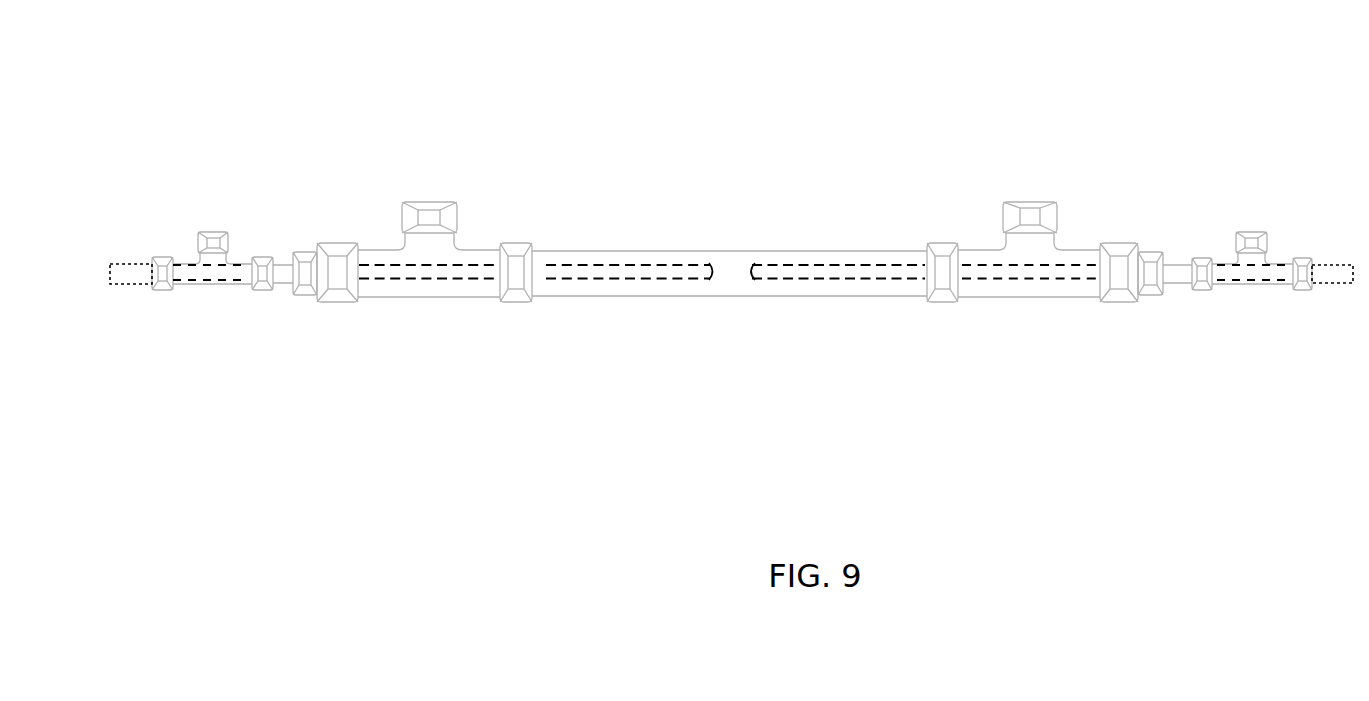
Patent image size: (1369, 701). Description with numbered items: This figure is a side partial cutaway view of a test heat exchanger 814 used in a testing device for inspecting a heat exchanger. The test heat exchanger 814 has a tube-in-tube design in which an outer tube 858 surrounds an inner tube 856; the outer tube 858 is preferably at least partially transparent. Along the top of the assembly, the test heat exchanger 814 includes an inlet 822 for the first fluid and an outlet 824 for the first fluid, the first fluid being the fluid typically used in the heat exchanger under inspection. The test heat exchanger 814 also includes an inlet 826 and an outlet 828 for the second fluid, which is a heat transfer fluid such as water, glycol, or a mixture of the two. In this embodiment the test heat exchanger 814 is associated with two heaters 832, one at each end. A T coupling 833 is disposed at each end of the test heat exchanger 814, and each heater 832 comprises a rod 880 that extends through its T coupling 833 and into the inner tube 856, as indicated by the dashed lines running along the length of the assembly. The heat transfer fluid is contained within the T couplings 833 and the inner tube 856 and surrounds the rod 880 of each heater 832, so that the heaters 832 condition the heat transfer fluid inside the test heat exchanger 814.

The test heat exchanger 814 is at (750, 180).
The inlet for the first fluid 822 is at (428, 197).
The outlet for the first fluid 824 is at (1043, 200).
The inlet for the second fluid 826 is at (1253, 238).
The outlet for the second fluid 828 is at (200, 237).
The heater 832 is at (132, 283).
The T coupling 833 is at (208, 285).
The inner tube 856 is at (713, 285).
The outer tube 858 is at (800, 295).
The rod 880 is at (575, 270).